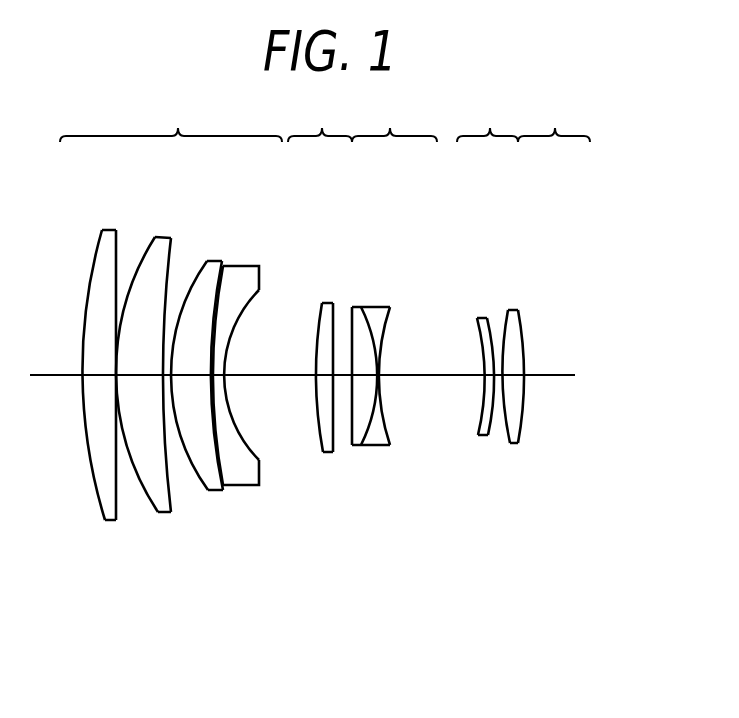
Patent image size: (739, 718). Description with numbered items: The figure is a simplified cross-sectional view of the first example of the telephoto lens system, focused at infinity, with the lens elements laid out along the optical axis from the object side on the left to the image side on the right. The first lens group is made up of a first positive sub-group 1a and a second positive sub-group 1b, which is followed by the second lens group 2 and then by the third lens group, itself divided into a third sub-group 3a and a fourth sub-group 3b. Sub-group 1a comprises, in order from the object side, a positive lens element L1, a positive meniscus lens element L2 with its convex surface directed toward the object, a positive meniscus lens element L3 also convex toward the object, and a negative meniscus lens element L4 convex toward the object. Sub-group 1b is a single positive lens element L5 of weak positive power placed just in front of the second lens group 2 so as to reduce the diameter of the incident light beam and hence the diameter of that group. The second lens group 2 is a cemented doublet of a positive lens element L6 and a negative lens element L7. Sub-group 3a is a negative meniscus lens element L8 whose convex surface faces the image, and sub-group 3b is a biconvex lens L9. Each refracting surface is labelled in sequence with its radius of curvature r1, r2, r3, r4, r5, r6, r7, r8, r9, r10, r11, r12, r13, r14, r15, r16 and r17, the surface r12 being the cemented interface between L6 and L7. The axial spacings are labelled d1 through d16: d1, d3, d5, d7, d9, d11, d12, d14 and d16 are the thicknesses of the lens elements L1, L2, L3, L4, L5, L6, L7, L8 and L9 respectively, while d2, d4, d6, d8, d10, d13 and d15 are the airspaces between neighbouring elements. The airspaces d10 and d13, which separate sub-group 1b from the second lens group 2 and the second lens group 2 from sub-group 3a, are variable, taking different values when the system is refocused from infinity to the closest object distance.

The first positive sub-group 1a is at (171, 117).
The second positive sub-group 1b is at (320, 117).
The second lens group 2 is at (394, 117).
The third sub-group 3a is at (487, 117).
The fourth sub-group 3b is at (554, 117).
The positive lens element L1 is at (104, 497).
The positive meniscus lens element L2 is at (170, 497).
The positive meniscus lens element L3 is at (203, 490).
The negative meniscus lens element L4 is at (255, 487).
The positive lens element L5 is at (320, 350).
The positive lens element L6 is at (362, 362).
The negative lens element L7 is at (390, 325).
The eighth lens L8 is at (483, 348).
The ninth lens L9 is at (513, 343).
The radius of curvature of first surface r1 is at (100, 250).
The radius of curvature of second surface r2 is at (117, 248).
The radius of curvature of third surface r3 is at (151, 249).
The radius of curvature of fourth surface r4 is at (172, 258).
The radius of curvature of fifth surface r5 is at (197, 274).
The radius of curvature of sixth surface r6 is at (217, 300).
The radius of curvature of seventh surface r7 is at (221, 305).
The radius of curvature of eighth surface r8 is at (255, 300).
The radius of curvature of ninth surface r9 is at (322, 304).
The radius of curvature of tenth surface r10 is at (336, 305).
The radius of curvature of eleventh surface r11 is at (351, 308).
The radius of curvature of twelfth surface r12 is at (366, 308).
The radius of curvature of thirteenth surface r13 is at (391, 308).
The radius of curvature of fourteenth surface r14 is at (477, 318).
The radius of curvature of fifteenth surface r15 is at (487, 318).
The radius of curvature of sixteenth surface r16 is at (508, 310).
The radius of curvature of seventeenth surface r17 is at (518, 310).
The thickness of first lens element d1 is at (94, 380).
The airspace between first and second lens elements d2 is at (118, 380).
The thickness of second lens element d3 is at (141, 380).
The airspace between second and third lens elements d4 is at (167, 380).
The thickness of third lens element d5 is at (192, 380).
The airspace between third and fourth lens elements d6 is at (212, 380).
The thickness of fourth lens element d7 is at (219, 380).
The airspace between fourth and fifth lens elements d8 is at (273, 380).
The thickness of fifth lens element d9 is at (325, 380).
The variable airspace between first and second lens groups d10 is at (342, 380).
The thickness of sixth lens element d11 is at (365, 380).
The thickness of seventh lens element d12 is at (378, 380).
The variable airspace between second and third lens groups d13 is at (431, 380).
The thickness of negative meniscus lens of third sub-group d14 is at (489, 380).
The airspace between third and fourth sub-groups d15 is at (498, 380).
The thickness of biconvex lens of fourth sub-group d16 is at (516, 380).